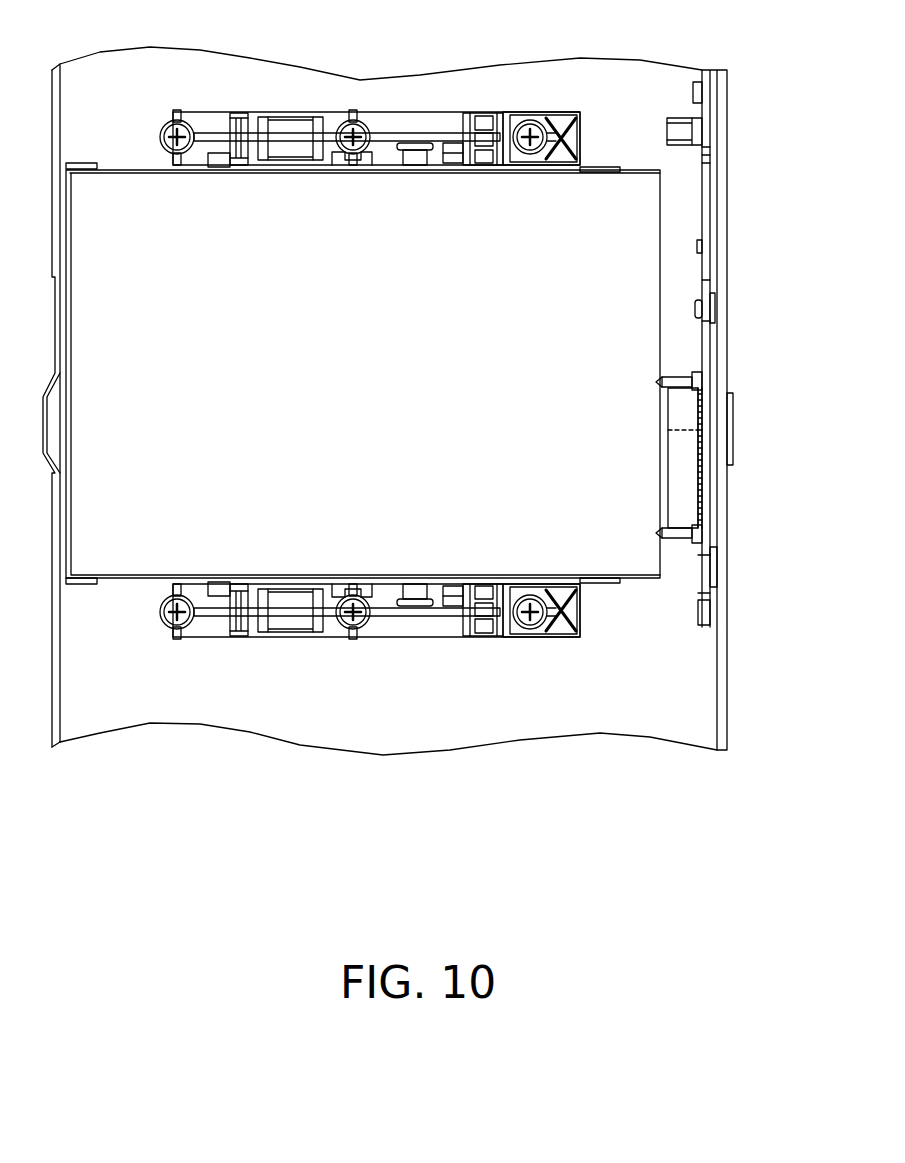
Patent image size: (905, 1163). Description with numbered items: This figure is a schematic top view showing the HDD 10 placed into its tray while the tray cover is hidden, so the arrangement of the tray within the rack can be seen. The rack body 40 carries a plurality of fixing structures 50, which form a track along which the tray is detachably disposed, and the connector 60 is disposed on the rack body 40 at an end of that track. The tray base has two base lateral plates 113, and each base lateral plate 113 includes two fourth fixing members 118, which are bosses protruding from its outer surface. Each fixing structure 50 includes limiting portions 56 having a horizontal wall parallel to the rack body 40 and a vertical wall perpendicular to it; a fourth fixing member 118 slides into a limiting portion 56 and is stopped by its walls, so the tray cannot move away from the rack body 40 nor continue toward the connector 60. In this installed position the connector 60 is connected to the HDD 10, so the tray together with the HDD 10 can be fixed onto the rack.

The HDD 10 is at (589, 432).
The rack body 40 is at (537, 693).
The fixing structures 50 is at (378, 650).
The limiting portion 56 is at (229, 148).
The connector 60 is at (690, 407).
The base lateral plates 113 is at (604, 166).
The fourth fixing member 118 is at (220, 154).